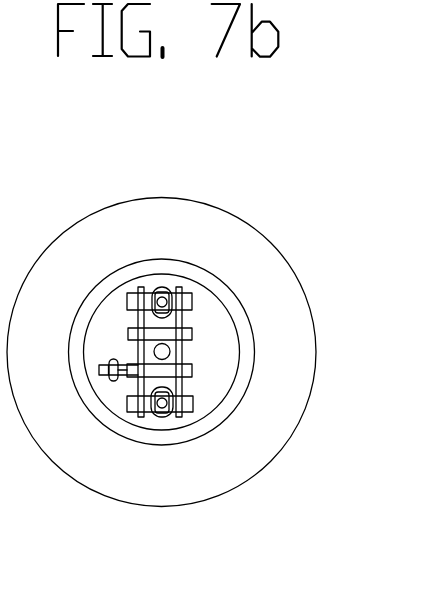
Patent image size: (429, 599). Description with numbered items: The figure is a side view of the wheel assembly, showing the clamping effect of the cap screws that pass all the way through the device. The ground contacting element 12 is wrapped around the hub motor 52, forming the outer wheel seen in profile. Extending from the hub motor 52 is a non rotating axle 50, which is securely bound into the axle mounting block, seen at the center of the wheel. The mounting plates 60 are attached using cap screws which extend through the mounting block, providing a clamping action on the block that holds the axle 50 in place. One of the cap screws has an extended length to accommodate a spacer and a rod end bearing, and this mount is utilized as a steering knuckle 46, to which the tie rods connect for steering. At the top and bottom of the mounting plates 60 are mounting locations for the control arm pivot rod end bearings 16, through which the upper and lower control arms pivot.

The ground contacting element 12 is at (257, 285).
The hub motor 52 is at (218, 345).
The non rotating axle 50 is at (162, 352).
The mounting plates 60 is at (178, 383).
The spindle steering knuckle 46 is at (128, 377).
The rod end bearing 16 is at (181, 418).